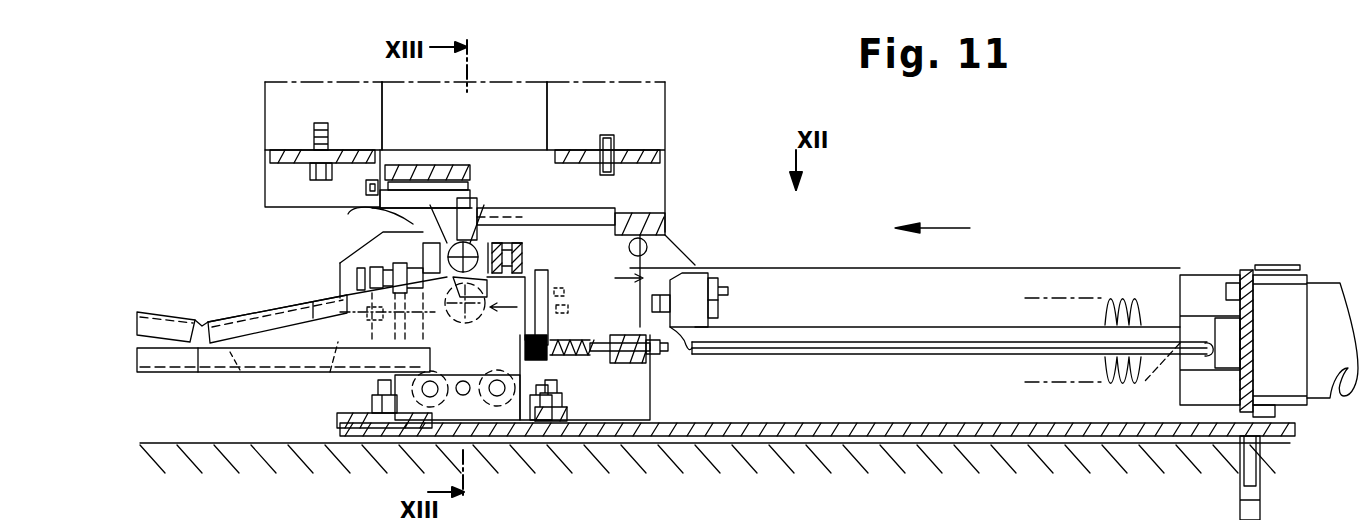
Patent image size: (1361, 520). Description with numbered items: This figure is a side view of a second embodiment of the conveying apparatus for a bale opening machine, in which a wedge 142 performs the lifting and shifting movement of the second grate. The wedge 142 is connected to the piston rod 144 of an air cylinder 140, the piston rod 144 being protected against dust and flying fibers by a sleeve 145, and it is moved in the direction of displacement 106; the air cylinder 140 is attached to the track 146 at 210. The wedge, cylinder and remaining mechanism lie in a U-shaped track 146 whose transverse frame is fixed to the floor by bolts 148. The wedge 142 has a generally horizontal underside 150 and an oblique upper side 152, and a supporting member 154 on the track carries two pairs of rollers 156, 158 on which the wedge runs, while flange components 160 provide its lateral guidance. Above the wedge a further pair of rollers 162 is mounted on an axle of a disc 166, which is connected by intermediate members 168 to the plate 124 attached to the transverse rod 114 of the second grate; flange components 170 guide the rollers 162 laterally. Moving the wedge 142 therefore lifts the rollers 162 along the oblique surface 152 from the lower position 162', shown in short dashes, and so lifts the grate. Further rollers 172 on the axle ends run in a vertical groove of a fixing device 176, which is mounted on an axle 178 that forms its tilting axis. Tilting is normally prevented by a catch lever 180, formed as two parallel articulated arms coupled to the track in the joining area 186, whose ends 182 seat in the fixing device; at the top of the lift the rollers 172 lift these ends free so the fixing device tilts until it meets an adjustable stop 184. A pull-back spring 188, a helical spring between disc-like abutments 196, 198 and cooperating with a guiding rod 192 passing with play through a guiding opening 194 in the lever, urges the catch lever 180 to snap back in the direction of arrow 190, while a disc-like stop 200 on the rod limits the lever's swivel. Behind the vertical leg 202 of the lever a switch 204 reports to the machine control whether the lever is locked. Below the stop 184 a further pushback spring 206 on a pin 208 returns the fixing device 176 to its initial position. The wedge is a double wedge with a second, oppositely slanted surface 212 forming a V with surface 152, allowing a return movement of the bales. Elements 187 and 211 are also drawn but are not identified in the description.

The direction of displacement 106 is at (950, 226).
The transverse rod 114 is at (265, 122).
The plate 124 is at (265, 190).
The air cylinder 140 is at (1270, 292).
The wedge 142 is at (297, 340).
The piston rod 144 is at (987, 350).
The sleeve 145 is at (1112, 292).
The U-shaped track 146 is at (1032, 438).
The bolts 148 is at (1240, 478).
The horizontal underside 150 is at (262, 372).
The oblique upper side 152 is at (363, 291).
The supporting member 154 is at (498, 425).
The pair of rollers 156 is at (397, 428).
The pair of rollers 158 is at (585, 378).
The flange components 160 is at (212, 352).
The pair of rollers 162 is at (533, 254).
The lower position of rollers 162' is at (486, 310).
The disc 166 is at (429, 180).
The intermediate members 168 is at (394, 165).
The flange components 170 is at (230, 323).
The further rollers 172 is at (442, 230).
The fixing device 176 is at (369, 202).
The axle 178 is at (467, 395).
The catch lever 180 is at (506, 172).
The ends of catch lever 182 is at (476, 220).
The adjustable stop 184 is at (393, 278).
The joining area 186 is at (656, 246).
The housing 187 is at (661, 221).
The pull-back spring 188 is at (596, 352).
The arrow 190 is at (621, 263).
The guiding rod 192 is at (652, 353).
The guiding opening 194 is at (636, 362).
The disc-like abutment 196 is at (550, 352).
The disc-like abutment 198 is at (690, 300).
The disc-like stop 200 is at (674, 354).
The vertical leg 202 is at (660, 267).
The switch 204 is at (722, 303).
The pushback spring 206 is at (380, 372).
The pin 208 is at (330, 300).
The attachment point 210 is at (1156, 381).
The plunger 211 is at (552, 307).
The second wedge surface 212 is at (167, 322).